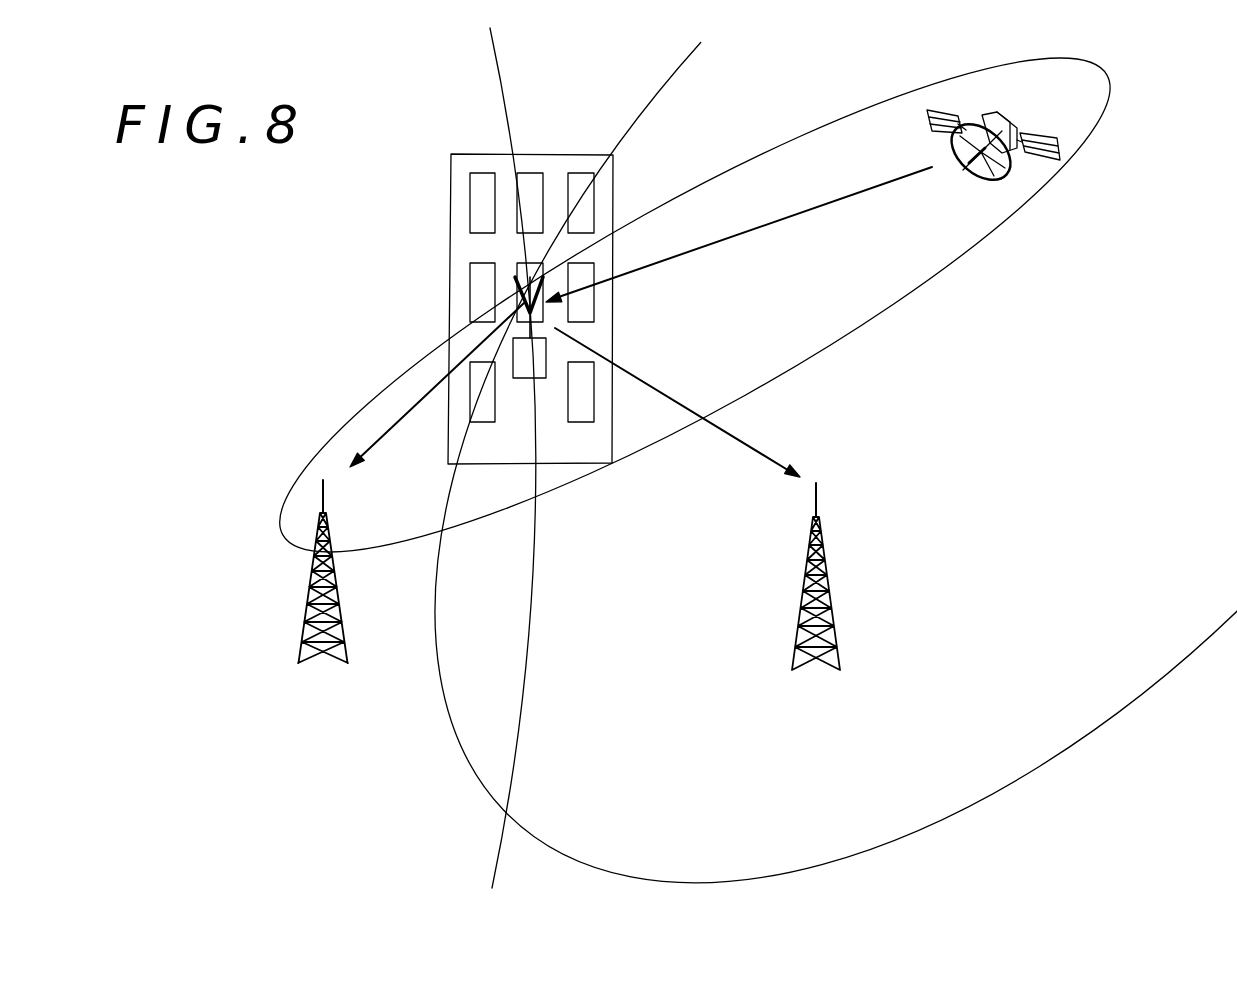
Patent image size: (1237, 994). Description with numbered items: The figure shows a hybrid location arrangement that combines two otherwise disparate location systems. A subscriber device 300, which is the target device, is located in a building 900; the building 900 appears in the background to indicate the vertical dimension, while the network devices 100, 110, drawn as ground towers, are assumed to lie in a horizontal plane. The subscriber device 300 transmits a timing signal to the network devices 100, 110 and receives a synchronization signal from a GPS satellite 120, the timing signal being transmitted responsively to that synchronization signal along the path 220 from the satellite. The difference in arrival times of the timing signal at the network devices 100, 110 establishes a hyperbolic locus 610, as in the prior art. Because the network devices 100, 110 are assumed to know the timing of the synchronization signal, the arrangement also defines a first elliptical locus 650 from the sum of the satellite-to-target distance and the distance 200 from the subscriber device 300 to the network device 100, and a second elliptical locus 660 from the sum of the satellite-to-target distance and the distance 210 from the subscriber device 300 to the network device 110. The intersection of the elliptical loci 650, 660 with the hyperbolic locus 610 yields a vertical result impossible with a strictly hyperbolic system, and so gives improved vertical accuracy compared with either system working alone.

The network device 100 is at (303, 638).
The network device 110 is at (835, 628).
The satellite 120 is at (1000, 115).
The distance 200 is at (437, 398).
The distance 210 is at (653, 383).
The signal path from satellite 220 is at (718, 243).
The subscriber device 300 is at (540, 378).
The hyperbolic locus 610 is at (517, 737).
The first elliptical locus 650 is at (893, 302).
The second elliptical locus 660 is at (1037, 768).
The building 900 is at (528, 152).